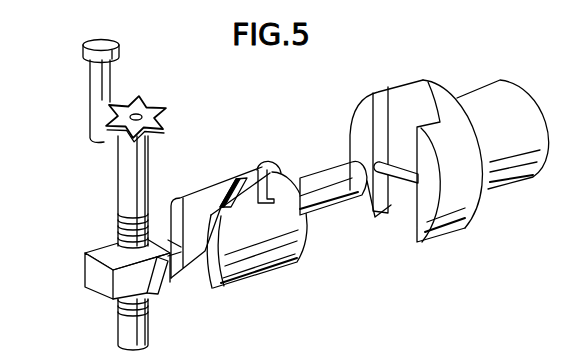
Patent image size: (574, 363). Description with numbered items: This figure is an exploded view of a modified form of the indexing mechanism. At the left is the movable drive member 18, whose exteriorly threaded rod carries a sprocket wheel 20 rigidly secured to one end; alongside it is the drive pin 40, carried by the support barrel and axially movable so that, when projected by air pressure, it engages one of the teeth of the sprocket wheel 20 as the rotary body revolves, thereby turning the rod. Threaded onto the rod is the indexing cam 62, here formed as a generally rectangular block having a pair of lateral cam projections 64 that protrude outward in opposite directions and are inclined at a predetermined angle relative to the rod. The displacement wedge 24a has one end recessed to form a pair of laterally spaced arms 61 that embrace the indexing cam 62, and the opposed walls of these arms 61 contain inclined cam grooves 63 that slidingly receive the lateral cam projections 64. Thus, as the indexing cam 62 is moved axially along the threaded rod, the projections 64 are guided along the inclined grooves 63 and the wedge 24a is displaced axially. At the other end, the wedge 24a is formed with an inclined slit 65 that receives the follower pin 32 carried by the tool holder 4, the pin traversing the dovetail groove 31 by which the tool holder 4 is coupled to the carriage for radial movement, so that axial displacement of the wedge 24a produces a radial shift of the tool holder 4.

The tool holder 4 is at (474, 106).
The movable drive member 18 is at (123, 205).
The sprocket wheel 20 is at (138, 102).
The rod 24a is at (333, 199).
The dovetail groove 31 is at (380, 106).
The follower pin 32 is at (412, 184).
The drive pin 40 is at (99, 99).
The laterally spaced arms 61 is at (197, 207).
The indexing cam 62 is at (103, 279).
The inclined cam grooves 63 is at (265, 200).
The lateral cam projections 64 is at (153, 294).
The inclined slit 65 is at (383, 212).